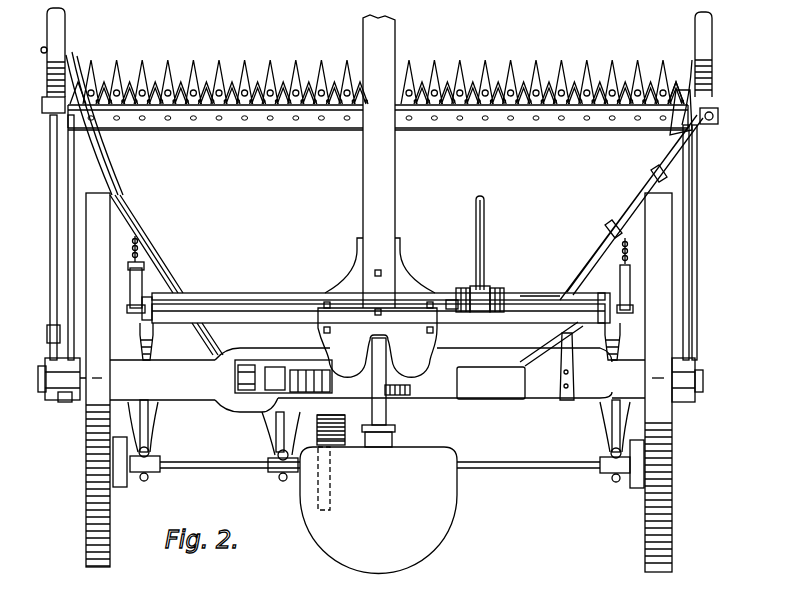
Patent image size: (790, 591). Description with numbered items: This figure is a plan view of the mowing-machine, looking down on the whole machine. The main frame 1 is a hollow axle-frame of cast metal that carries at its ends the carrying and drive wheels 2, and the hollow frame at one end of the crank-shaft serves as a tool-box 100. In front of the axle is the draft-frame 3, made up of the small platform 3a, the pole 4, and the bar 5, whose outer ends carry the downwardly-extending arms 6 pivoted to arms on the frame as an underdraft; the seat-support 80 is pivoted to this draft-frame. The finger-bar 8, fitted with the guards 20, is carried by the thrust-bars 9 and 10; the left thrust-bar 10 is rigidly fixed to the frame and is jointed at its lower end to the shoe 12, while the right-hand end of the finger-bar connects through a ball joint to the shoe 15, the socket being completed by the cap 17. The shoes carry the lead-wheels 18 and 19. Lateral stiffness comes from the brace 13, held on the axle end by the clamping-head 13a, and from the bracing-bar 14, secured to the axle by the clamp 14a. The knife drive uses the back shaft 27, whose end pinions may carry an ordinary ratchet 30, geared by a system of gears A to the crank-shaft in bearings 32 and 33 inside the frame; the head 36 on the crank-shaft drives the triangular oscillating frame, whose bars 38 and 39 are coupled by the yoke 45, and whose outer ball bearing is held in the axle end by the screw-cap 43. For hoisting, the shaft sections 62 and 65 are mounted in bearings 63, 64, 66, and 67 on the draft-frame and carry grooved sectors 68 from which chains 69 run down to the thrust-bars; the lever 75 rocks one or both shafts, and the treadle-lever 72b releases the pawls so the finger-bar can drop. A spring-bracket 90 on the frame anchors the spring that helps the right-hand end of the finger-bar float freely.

The main frame 1 is at (442, 410).
The carrying and drive wheels 2 is at (86, 458).
The draft-frame 3 is at (405, 286).
The small platform 3a is at (377, 339).
The pole 4 is at (379, 161).
The bar 5 is at (551, 344).
The downwardly-extending arms 6 is at (152, 334).
The finger-bar 8 is at (535, 126).
The thrust-bar 9 is at (635, 210).
The thrust-bar 10 is at (144, 276).
The shoe 12 is at (78, 138).
The brace 13 is at (70, 246).
The clamping-head 13a is at (60, 400).
The bracing-bar 14 is at (690, 244).
The clamp 14a is at (698, 388).
The shoe 15 is at (690, 107).
The cap 17 is at (716, 118).
The lead-wheel 18 is at (66, 26).
The lead-wheel 19 is at (694, 32).
The guards 20 is at (510, 74).
The back shaft 27 is at (205, 470).
The ratchet 30 is at (122, 487).
The bearing 32 is at (304, 370).
The bearing 33 is at (394, 398).
The head 36 is at (272, 392).
The bar 38 is at (54, 308).
The bar 39 is at (186, 300).
The screw-cap 43 is at (48, 369).
The yoke 45 is at (247, 366).
The section of shaft 62 is at (256, 296).
The bearing 63 is at (160, 296).
The bearing 64 is at (463, 290).
The section of shaft 65 is at (531, 292).
The bearing 66 is at (502, 293).
The bearing 67 is at (604, 297).
The grooved sectors 68 is at (146, 270).
The chains 69 is at (133, 256).
The treadle-lever 72b is at (450, 310).
The lever 75 is at (485, 220).
The seat-support 80 is at (388, 363).
The spring-bracket 90 is at (569, 355).
The tool-box 100 is at (491, 383).
The system of gears A is at (378, 510).